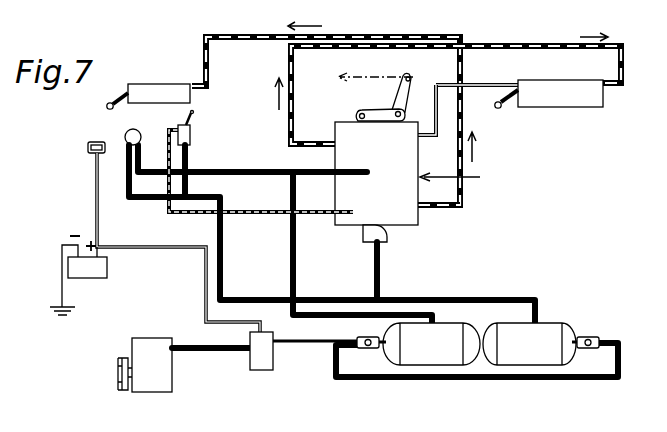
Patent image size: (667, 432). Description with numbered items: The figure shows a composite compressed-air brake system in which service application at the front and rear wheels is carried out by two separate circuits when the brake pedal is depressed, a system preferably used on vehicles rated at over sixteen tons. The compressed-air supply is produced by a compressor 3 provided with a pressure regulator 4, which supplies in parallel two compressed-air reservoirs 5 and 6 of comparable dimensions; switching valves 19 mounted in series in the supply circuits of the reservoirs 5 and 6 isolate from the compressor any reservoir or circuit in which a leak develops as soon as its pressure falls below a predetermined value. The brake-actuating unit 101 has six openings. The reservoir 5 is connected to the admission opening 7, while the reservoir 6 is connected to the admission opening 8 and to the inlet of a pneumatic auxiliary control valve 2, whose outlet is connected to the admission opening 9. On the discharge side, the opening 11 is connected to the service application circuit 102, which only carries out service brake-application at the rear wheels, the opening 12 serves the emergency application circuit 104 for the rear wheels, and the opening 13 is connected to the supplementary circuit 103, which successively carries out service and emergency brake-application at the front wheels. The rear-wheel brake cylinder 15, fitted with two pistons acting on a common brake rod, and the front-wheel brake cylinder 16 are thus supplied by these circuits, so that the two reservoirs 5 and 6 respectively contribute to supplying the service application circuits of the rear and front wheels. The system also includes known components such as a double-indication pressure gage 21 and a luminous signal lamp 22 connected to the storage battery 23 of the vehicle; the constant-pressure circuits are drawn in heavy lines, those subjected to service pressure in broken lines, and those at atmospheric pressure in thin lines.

The pneumatic auxiliary control valve 2 is at (192, 132).
The compressor 3 is at (162, 375).
The pressure regulator 4 is at (272, 368).
The compressed-air reservoir 5 is at (430, 365).
The compressed-air reservoir 6 is at (515, 358).
The compressed-air admission opening 7 is at (373, 173).
The compressed-air admission opening 8 is at (390, 233).
The compressed-air admission opening 9 is at (351, 213).
The discharge opening 11 is at (334, 140).
The discharge opening 12 is at (421, 137).
The discharge opening 13 is at (424, 207).
The rear-wheel brake cylinder 15 is at (575, 102).
The front-wheel brake cylinder 16 is at (158, 90).
The switching valve 19 is at (371, 350).
The double-indication pressure gage 21 is at (125, 134).
The luminous signal lamp 22 is at (88, 147).
The storage battery 23 is at (105, 272).
The brake-actuating unit 101 is at (465, 171).
The service application circuit 102 is at (538, 43).
The service and emergency application circuit 103 is at (212, 44).
The emergency application circuit 104 is at (471, 83).